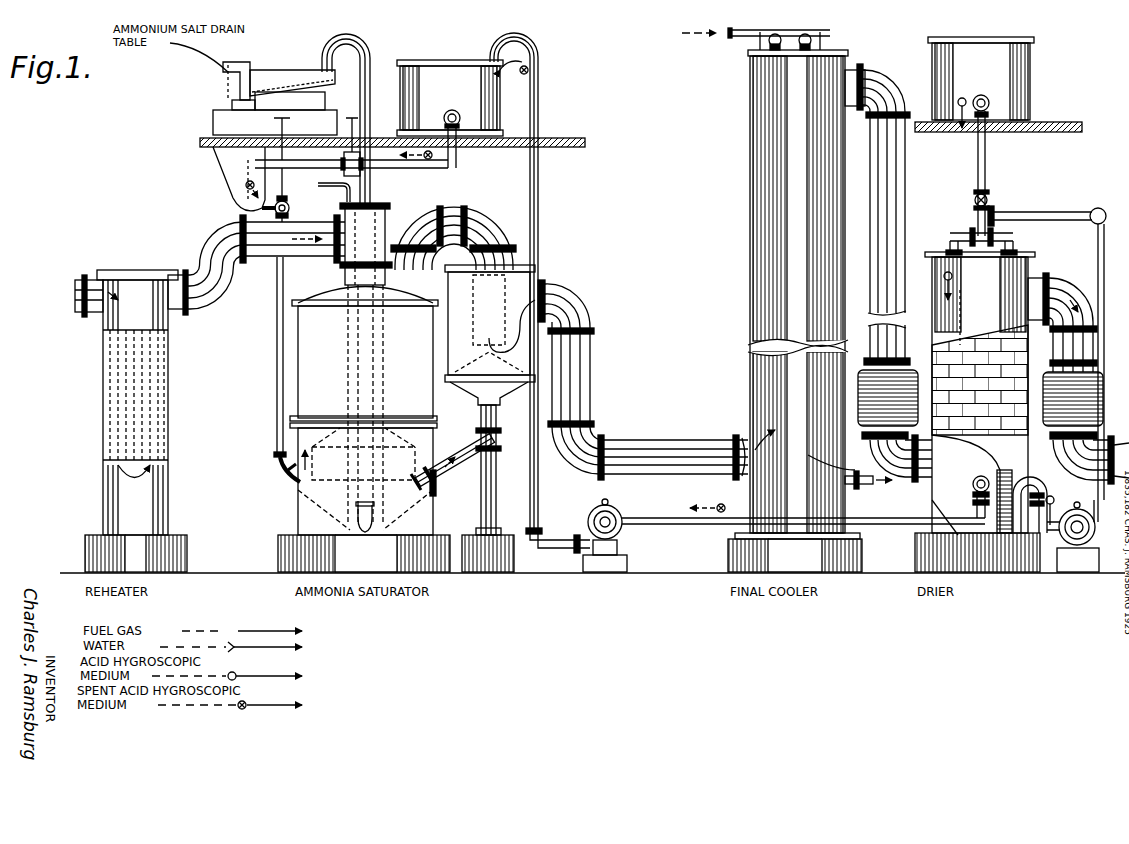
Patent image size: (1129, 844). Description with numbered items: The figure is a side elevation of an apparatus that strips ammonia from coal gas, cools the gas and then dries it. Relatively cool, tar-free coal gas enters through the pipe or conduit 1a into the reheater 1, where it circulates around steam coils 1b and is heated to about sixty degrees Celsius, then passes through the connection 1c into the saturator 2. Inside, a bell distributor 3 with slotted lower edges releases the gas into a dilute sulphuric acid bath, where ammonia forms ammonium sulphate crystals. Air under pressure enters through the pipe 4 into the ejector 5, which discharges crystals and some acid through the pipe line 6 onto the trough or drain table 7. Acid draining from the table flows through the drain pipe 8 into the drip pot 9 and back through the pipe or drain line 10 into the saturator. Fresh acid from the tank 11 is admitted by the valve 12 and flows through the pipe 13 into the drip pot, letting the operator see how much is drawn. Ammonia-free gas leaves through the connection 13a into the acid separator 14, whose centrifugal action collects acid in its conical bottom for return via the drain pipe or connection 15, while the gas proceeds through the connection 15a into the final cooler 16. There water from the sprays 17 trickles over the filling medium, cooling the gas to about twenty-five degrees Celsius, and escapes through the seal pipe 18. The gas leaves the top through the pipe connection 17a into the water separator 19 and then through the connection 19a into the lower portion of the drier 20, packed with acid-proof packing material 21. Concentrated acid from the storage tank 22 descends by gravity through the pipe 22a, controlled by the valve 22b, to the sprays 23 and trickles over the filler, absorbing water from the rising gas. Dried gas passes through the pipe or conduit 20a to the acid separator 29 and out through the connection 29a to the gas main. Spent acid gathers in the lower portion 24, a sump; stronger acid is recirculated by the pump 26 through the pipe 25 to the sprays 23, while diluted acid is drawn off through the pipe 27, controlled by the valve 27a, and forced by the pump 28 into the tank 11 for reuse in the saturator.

The reheater 1 is at (110, 495).
The pipe or conduit 1a is at (80, 300).
The steam coils 1b is at (150, 420).
The connection 1c is at (215, 232).
The saturator 2 is at (364, 428).
The bell distributor 3 is at (415, 450).
The pipe 4 is at (340, 190).
The ejector 5 is at (374, 520).
The pipe line 6 is at (368, 52).
The trough or drain table 7 is at (282, 62).
The drain pipe 8 is at (212, 106).
The drip pot 9 is at (222, 178).
The pipe or drain line 10 is at (278, 290).
The tank 11 is at (450, 62).
The valve 12 is at (352, 116).
The pipe 13 is at (418, 170).
The connection 13a is at (482, 210).
The acid separator 14 is at (528, 288).
The drain pipe or connection 15 is at (462, 460).
The connection 15a is at (590, 392).
The final cooler 16 is at (752, 388).
The sprays 17 is at (832, 50).
The pipe connection 17a is at (898, 210).
The seal pipe 18 is at (862, 486).
The water separator 19 is at (888, 404).
The connection 19a is at (905, 484).
The drier 20 is at (980, 392).
The pipe or conduit 20a is at (1078, 290).
The packing material 21 is at (1052, 366).
The storage tank 22 is at (1026, 64).
The pipe 22a is at (986, 165).
The valve 22b is at (990, 200).
The sprays 23 is at (1016, 248).
The lower portion 24 is at (1005, 538).
The pipe 25 is at (1062, 212).
The pump 26 is at (1075, 548).
The pipe 27 is at (542, 58).
The valve 27a is at (970, 505).
The pump 28 is at (626, 540).
The acid separator 29 is at (1073, 405).
The connection 29a is at (1070, 456).